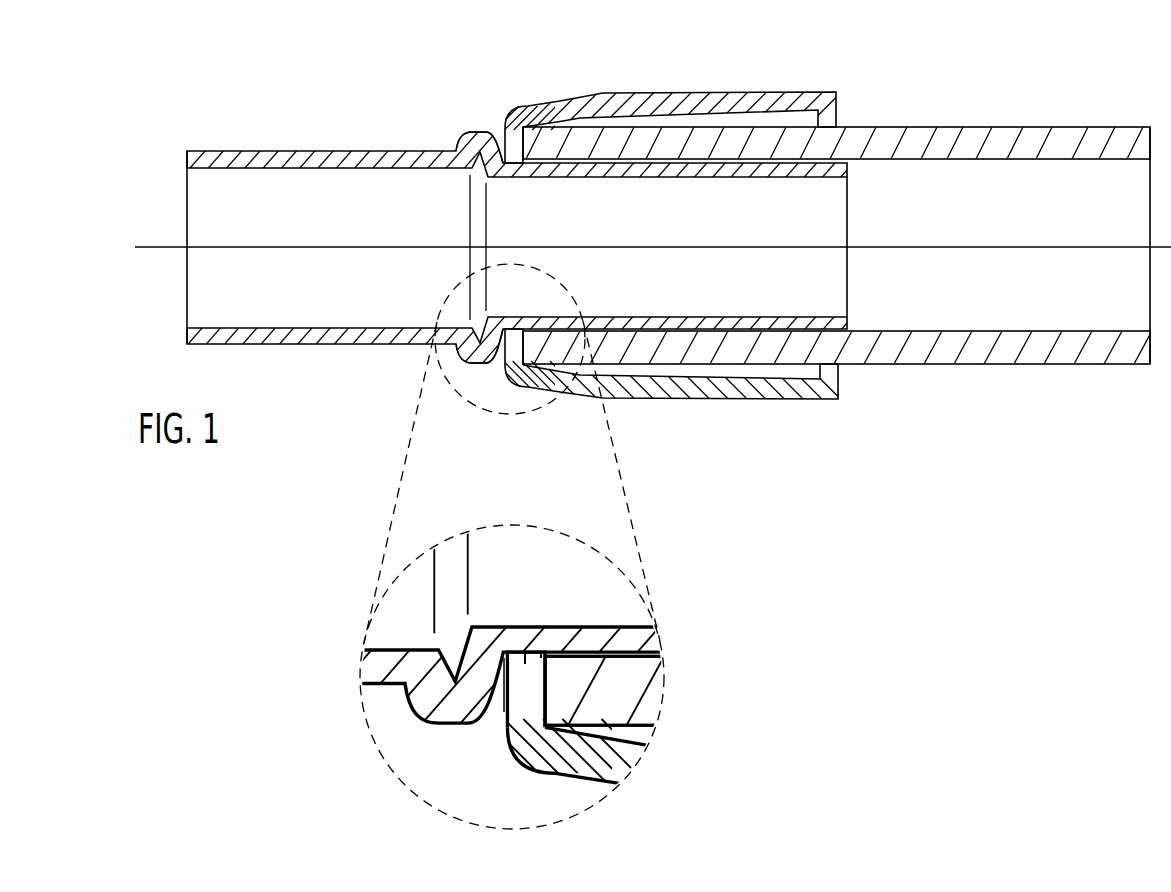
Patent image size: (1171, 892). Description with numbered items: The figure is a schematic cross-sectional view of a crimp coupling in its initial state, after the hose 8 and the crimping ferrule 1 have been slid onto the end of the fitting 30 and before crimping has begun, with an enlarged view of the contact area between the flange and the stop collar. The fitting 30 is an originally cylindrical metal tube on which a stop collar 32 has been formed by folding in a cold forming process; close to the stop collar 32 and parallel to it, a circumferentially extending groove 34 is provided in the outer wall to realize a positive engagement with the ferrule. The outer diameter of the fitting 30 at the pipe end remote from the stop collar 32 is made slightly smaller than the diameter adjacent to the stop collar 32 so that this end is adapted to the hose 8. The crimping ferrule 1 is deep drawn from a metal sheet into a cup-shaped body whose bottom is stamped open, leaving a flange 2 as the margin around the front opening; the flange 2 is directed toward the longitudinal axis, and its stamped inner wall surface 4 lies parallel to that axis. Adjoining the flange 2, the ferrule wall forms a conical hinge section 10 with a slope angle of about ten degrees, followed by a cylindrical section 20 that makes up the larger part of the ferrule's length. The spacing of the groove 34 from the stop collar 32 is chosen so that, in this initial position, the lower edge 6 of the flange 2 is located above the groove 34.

The crimping ferrule 1 is at (804, 456).
The flange 2 is at (503, 130).
The inner wall surface 4 is at (500, 698).
The lower edge 6 is at (548, 668).
The hose 8 is at (949, 126).
The conical hinge section 10 is at (551, 104).
The cylindrical section 20 is at (697, 92).
The fitting 30 is at (262, 150).
The stop collar 32 is at (472, 133).
The groove 34 is at (530, 650).